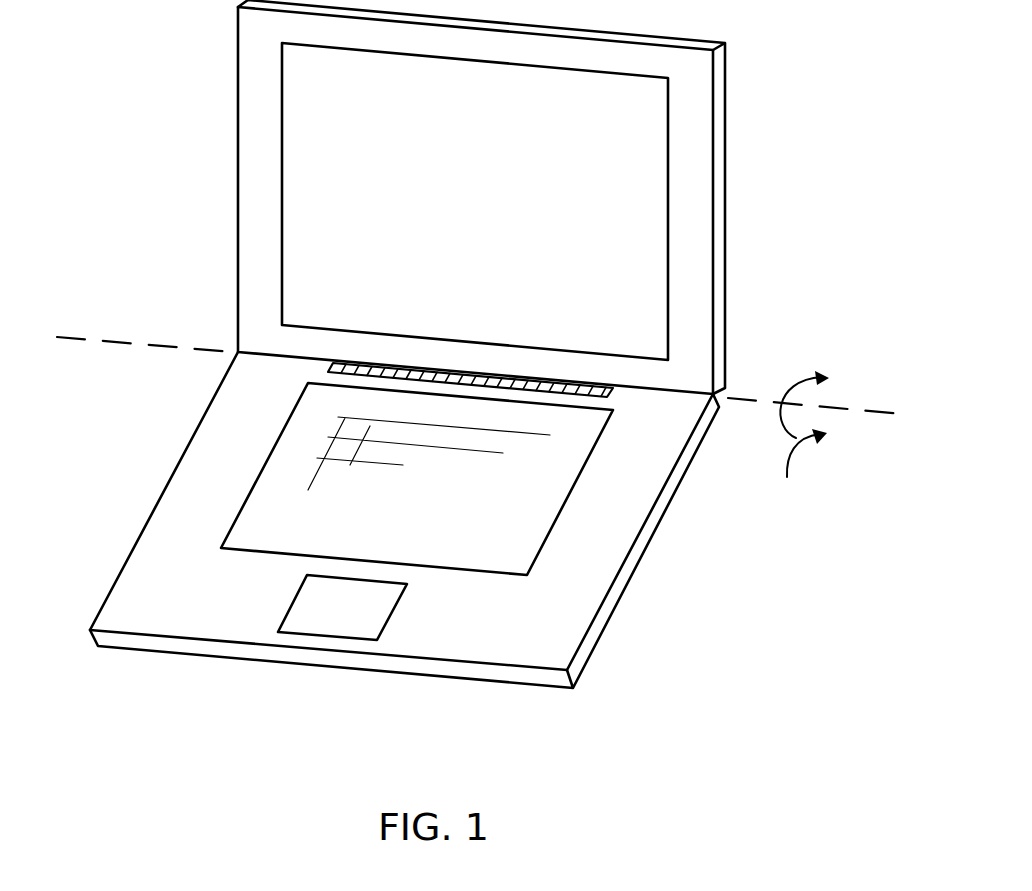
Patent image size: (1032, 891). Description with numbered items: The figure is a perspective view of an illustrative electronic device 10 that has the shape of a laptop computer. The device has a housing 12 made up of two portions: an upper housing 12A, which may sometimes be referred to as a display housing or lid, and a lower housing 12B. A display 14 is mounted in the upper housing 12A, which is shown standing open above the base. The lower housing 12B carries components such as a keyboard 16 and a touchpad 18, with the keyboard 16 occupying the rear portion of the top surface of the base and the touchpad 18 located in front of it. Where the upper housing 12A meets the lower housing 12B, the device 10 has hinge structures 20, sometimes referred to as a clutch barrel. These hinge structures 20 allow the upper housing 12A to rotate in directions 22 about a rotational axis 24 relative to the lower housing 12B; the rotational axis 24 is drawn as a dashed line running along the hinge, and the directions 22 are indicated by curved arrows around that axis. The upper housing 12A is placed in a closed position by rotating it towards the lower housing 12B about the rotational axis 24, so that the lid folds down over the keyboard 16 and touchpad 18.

The electronic device 10 is at (484, 368).
The housing 12 is at (439, 344).
The upper housing 12A is at (222, 10).
The lower housing 12B is at (215, 360).
The display 14 is at (628, 190).
The keyboard 16 is at (567, 500).
The touchpad 18 is at (392, 618).
The hinge structures 20 is at (578, 385).
The directions 22 is at (802, 438).
The rotational axis 24 is at (75, 337).